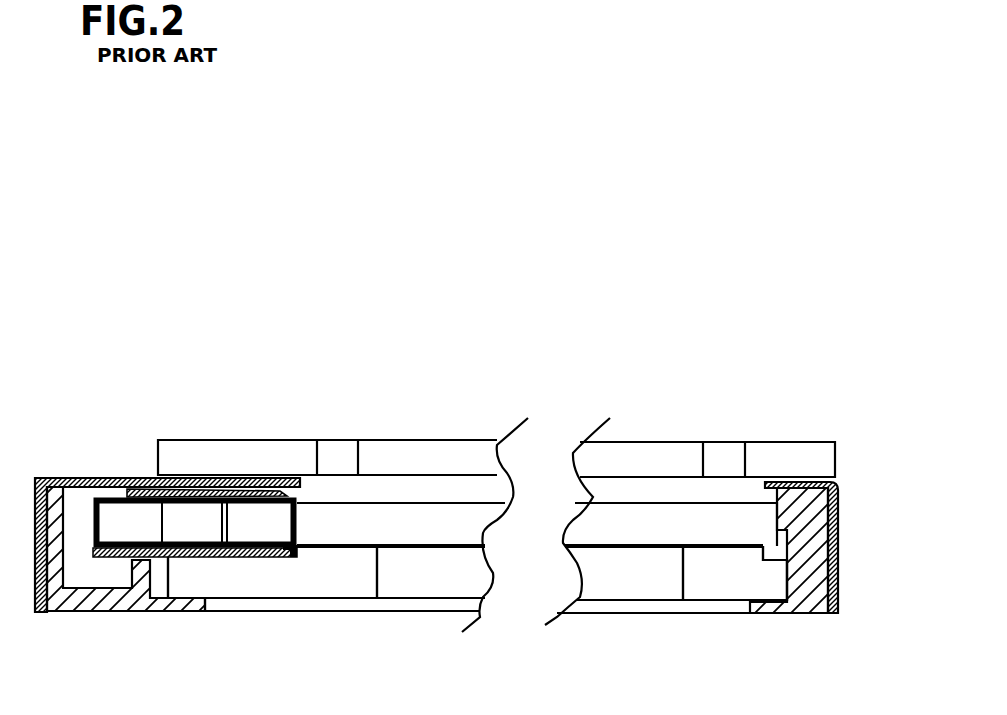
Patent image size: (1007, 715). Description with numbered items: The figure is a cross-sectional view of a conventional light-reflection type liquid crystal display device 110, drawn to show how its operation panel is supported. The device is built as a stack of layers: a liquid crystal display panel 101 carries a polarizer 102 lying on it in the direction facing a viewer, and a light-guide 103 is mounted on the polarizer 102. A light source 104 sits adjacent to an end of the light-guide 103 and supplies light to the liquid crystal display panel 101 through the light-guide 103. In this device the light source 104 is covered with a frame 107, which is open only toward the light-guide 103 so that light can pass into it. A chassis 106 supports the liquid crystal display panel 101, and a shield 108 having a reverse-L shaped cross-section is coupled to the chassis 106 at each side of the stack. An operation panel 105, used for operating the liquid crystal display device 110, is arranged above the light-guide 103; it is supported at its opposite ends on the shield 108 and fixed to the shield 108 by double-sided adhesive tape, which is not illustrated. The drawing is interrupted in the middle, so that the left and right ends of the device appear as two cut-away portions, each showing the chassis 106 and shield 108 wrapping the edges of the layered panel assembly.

The liquid crystal display panel 101 is at (335, 570).
The polarizer 102 is at (335, 570).
The light-guide 103 is at (420, 525).
The light source 104 is at (193, 520).
The operation panel 105 is at (448, 453).
The chassis 106 is at (103, 596).
The frame 107 is at (133, 489).
The shield 108 is at (60, 478).
The liquid crystal display device 110 is at (251, 282).